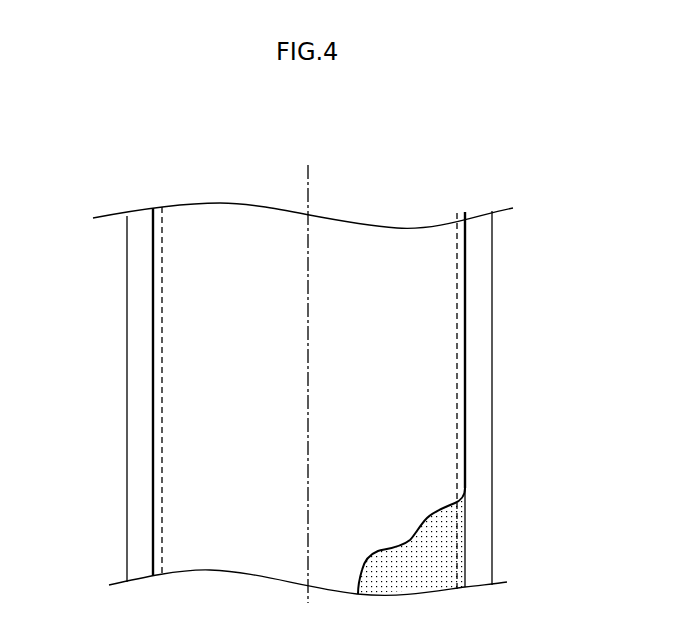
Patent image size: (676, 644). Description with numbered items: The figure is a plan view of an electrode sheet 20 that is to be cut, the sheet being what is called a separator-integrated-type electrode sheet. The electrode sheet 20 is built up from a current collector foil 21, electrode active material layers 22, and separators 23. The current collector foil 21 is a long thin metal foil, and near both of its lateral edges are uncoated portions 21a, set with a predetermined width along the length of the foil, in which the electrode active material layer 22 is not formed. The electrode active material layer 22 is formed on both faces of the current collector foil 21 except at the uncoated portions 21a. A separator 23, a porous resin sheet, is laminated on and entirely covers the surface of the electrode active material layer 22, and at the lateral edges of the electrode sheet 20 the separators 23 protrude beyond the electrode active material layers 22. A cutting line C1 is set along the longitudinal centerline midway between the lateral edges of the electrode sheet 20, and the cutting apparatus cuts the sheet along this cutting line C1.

The electrode sheet 20 is at (478, 160).
The current collector foil 21 is at (492, 335).
The uncoated portion 21a is at (138, 382).
The electrode active material layer 22 is at (447, 558).
The separator 23 is at (440, 450).
The cutting line C1 is at (311, 172).